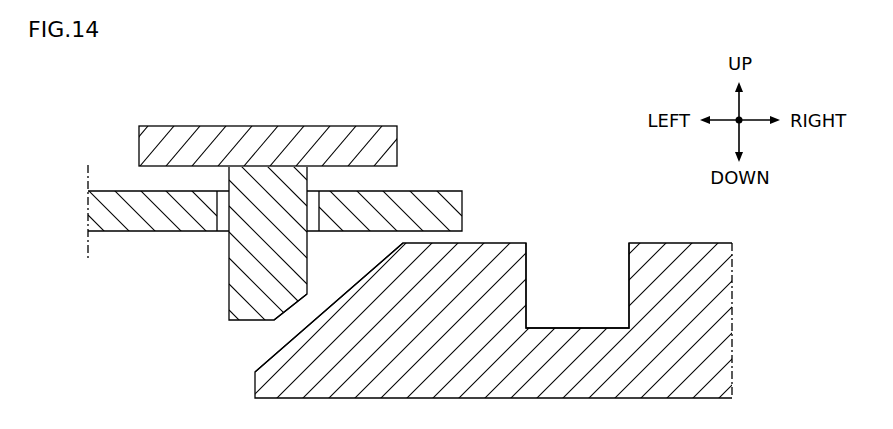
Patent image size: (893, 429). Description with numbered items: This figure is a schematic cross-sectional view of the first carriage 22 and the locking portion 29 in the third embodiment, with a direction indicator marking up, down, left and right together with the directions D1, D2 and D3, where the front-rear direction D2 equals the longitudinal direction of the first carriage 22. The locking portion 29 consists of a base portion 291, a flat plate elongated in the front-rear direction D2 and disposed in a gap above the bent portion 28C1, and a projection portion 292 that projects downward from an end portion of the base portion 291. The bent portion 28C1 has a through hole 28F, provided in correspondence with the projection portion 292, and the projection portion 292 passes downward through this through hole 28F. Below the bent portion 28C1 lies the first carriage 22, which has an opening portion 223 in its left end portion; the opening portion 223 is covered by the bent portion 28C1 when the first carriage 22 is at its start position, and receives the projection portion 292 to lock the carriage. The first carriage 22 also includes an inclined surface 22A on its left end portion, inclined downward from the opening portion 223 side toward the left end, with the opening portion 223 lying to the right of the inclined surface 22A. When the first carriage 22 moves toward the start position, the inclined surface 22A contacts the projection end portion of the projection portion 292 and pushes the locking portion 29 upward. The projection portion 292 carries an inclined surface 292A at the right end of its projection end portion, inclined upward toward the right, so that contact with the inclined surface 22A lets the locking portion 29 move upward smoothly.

The first carriage 22 is at (550, 268).
The inclined surface 22A is at (336, 300).
The opening portion 223 is at (580, 262).
The bent portion 28C1 is at (442, 191).
The through hole 28F is at (221, 240).
The locking portion 29 is at (261, 226).
The base portion 291 is at (262, 126).
The projection portion 292 is at (228, 250).
The inclined surface 292A is at (273, 322).
The direction D1 is at (737, 108).
The front-rear direction D2 is at (743, 123).
The direction D3 is at (730, 124).